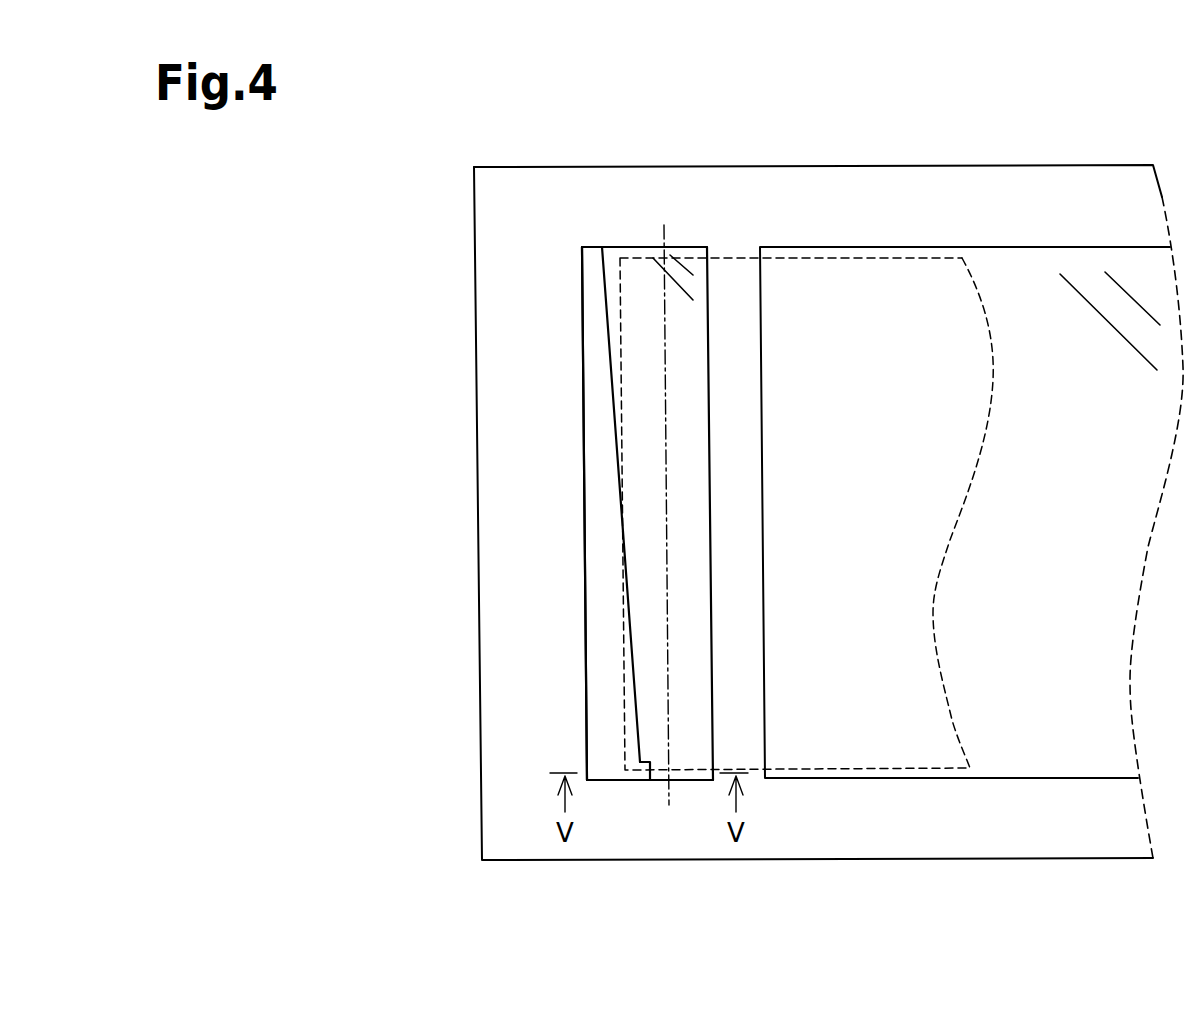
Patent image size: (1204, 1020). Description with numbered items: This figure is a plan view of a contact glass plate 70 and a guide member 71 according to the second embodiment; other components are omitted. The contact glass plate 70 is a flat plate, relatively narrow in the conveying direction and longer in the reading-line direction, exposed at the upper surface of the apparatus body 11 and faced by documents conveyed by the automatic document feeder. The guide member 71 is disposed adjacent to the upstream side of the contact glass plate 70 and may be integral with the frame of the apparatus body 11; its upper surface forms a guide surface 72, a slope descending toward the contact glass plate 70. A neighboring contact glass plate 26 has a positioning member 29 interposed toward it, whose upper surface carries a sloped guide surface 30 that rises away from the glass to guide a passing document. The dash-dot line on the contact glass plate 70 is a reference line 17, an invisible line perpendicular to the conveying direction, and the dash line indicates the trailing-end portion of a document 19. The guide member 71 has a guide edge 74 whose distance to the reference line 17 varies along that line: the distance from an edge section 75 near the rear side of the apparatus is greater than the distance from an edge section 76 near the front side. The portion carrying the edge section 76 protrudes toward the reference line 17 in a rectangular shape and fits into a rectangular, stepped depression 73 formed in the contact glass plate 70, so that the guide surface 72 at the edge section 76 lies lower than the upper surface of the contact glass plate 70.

The apparatus body 11 is at (447, 852).
The reference line 17 is at (670, 788).
The document 19 is at (865, 770).
The contact glass plate 26 is at (1007, 263).
The positioning member 29 is at (748, 238).
The guide surface 30 is at (718, 252).
The contact glass plate 70 is at (682, 253).
The guide member 71 is at (560, 512).
The guide surface 72 is at (602, 677).
The depression 73 is at (660, 773).
The guide edge 74 is at (610, 360).
The edge section 75 is at (602, 250).
The edge section 76 is at (643, 775).